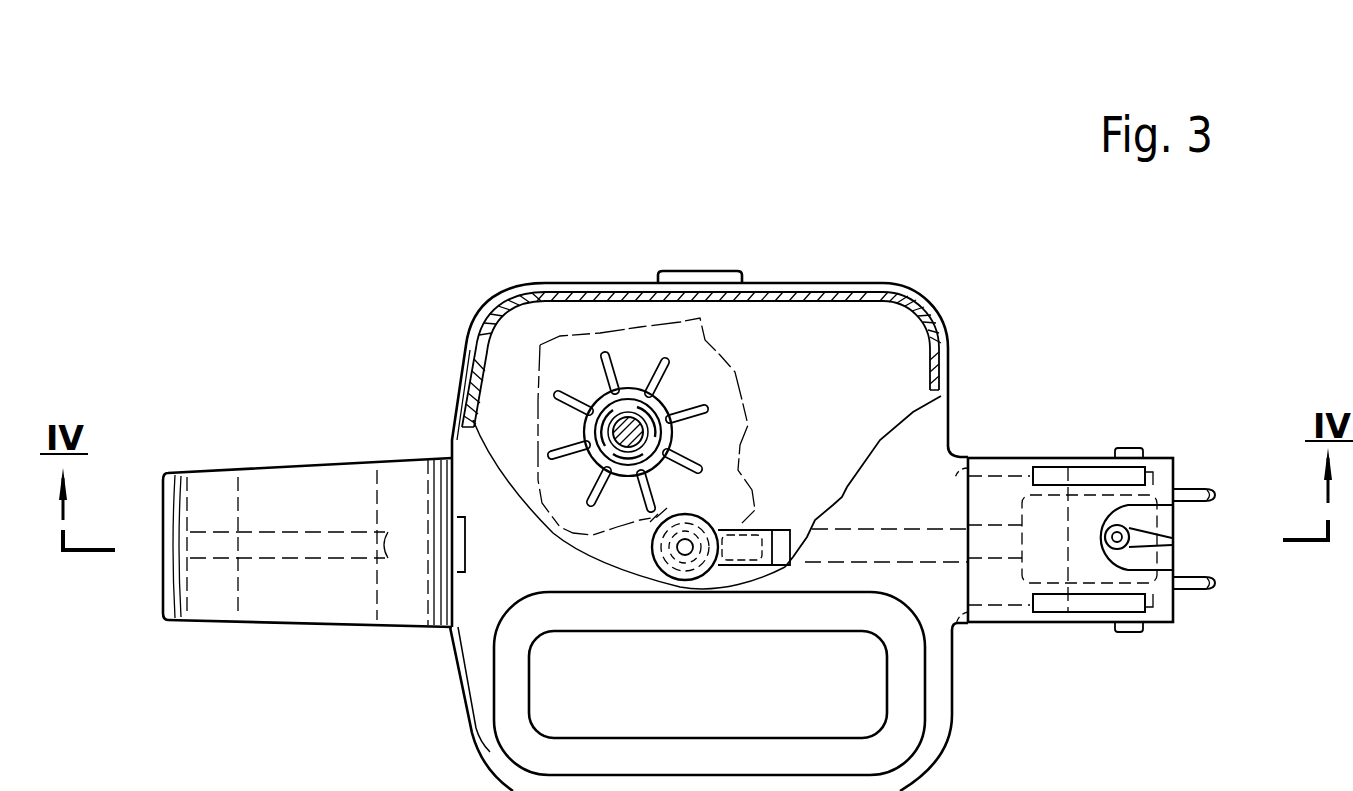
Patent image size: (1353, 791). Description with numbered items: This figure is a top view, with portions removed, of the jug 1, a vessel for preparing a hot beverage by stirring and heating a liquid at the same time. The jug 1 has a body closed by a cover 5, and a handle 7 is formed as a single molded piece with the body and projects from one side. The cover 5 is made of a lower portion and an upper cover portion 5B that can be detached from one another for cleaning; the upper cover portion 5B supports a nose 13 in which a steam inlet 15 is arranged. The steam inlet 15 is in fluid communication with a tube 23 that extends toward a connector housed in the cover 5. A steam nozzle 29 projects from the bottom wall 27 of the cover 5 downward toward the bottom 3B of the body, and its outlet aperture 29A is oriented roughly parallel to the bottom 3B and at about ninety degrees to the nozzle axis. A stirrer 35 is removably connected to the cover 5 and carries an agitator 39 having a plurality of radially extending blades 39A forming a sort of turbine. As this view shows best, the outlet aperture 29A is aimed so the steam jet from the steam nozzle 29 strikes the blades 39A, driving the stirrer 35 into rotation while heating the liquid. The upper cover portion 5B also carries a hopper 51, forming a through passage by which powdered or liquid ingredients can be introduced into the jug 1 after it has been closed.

The jug 1 is at (886, 220).
The cover 5 is at (799, 278).
The handle 7 is at (303, 487).
The nose 13 is at (1041, 446).
The steam inlet 15 is at (1120, 535).
The tube 23 is at (832, 520).
The bottom wall 27 is at (845, 414).
The steam nozzle 29 is at (708, 527).
The outlet aperture 29A is at (650, 522).
The stirrer 35 is at (648, 433).
The agitator 39 is at (576, 390).
The blades 39A is at (690, 377).
The bottom 3B is at (652, 349).
The upper cover portion 5B is at (917, 509).
The hopper 51 is at (712, 709).